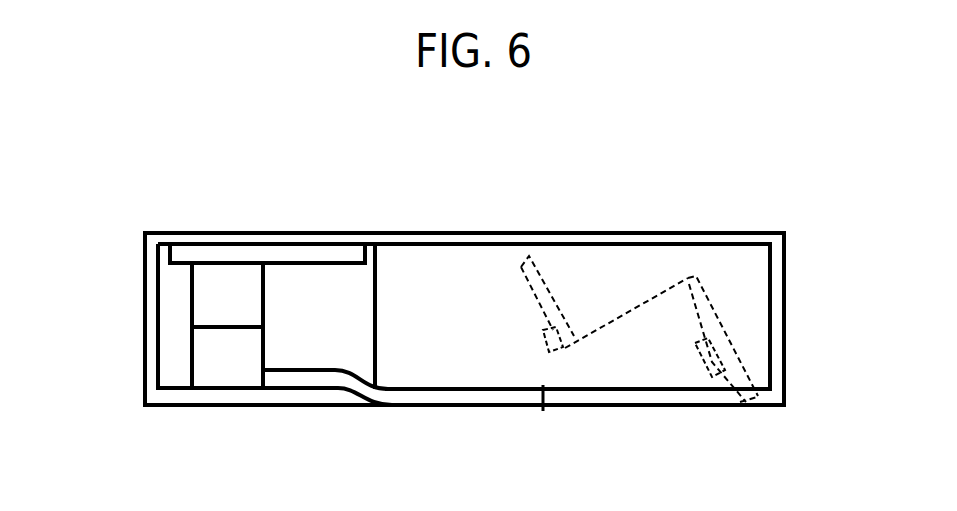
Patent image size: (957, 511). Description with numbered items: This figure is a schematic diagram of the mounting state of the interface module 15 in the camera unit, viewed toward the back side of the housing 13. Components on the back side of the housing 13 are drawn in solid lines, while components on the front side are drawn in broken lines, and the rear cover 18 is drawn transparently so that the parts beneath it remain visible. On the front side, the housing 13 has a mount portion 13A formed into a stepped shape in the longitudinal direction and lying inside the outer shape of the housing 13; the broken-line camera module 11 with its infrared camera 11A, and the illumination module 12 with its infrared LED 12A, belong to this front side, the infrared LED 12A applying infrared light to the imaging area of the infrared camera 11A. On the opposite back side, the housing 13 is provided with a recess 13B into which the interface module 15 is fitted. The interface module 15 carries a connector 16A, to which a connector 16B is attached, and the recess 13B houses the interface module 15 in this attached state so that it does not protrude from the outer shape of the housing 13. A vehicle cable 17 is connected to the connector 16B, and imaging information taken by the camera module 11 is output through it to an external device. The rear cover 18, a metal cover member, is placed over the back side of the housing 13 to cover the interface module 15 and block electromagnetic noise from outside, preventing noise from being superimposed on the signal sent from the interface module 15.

The camera module 11 is at (728, 372).
The infrared camera 11A is at (701, 350).
The illumination module 12 is at (520, 278).
The infrared LED 12A is at (549, 353).
The housing 13 is at (612, 232).
The mount portion 13A is at (638, 318).
The recess 13B is at (321, 347).
The interface module 15 is at (347, 254).
The connector 16A is at (208, 302).
The connector 16B is at (210, 356).
The vehicle cable 17 is at (443, 400).
The rear cover 18 is at (415, 268).